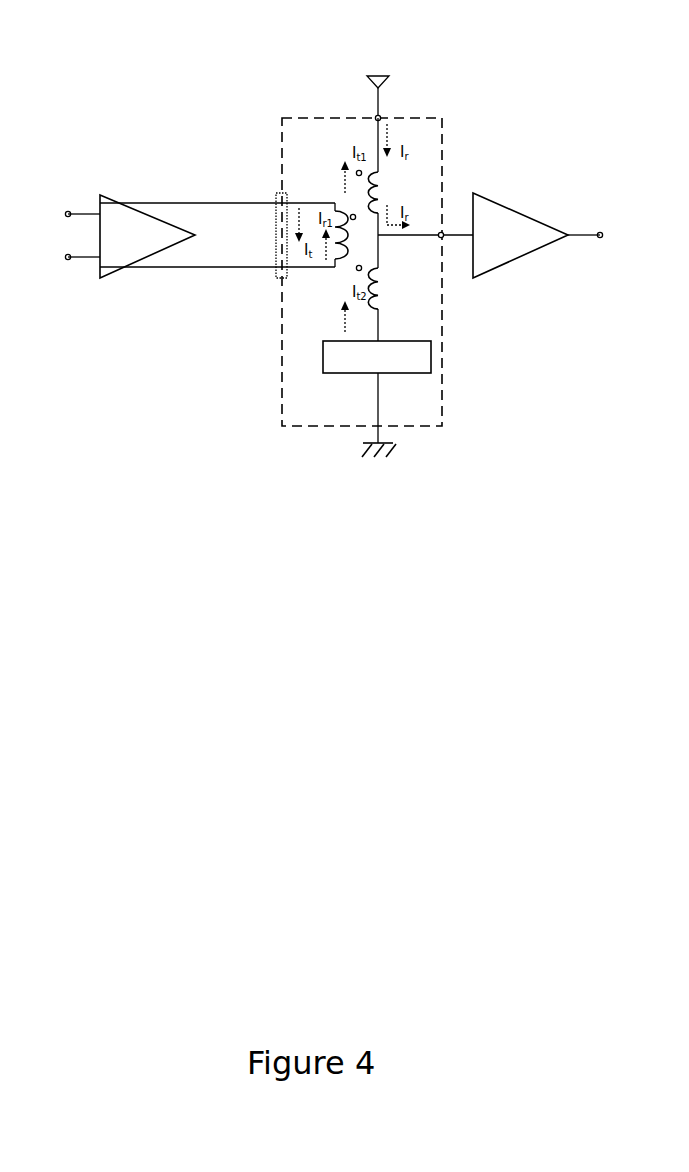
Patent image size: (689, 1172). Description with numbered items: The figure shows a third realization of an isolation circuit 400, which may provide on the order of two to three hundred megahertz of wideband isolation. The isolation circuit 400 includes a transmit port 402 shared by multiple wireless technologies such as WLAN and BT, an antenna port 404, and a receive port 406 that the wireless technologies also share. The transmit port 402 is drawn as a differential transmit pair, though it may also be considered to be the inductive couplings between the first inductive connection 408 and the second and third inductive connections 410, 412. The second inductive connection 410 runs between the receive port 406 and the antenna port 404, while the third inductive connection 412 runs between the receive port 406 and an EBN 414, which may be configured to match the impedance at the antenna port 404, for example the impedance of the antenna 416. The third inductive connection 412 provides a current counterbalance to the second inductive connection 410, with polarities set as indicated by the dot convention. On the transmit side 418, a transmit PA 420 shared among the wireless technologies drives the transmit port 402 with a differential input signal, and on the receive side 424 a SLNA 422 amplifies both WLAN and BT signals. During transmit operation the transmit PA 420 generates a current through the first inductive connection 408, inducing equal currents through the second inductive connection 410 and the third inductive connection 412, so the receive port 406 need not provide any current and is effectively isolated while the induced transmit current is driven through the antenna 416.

The isolation circuit 400 is at (428, 418).
The transmit port 402 is at (277, 193).
The antenna port 404 is at (376, 118).
The receive port 406 is at (440, 235).
The first inductive connection 408 is at (335, 266).
The second inductive connection 410 is at (379, 201).
The third inductive connection 412 is at (379, 285).
The EBN 414 is at (416, 366).
The antenna 416 is at (375, 76).
The transmit side 418 is at (93, 104).
The transmit PA 420 is at (107, 270).
The SLNA 422 is at (507, 258).
The receive side 424 is at (545, 150).